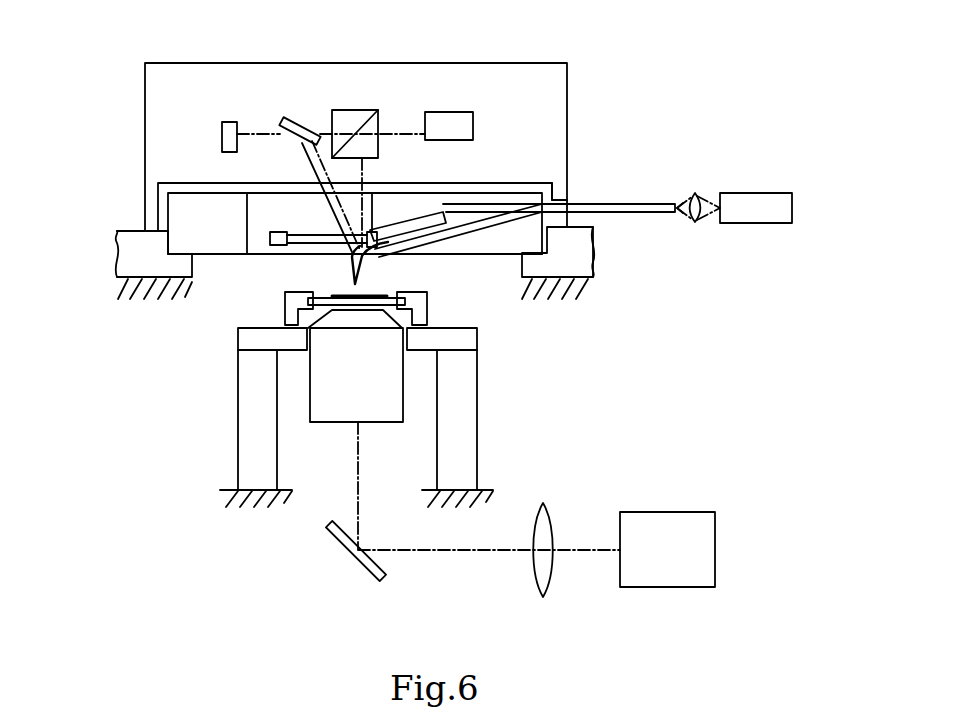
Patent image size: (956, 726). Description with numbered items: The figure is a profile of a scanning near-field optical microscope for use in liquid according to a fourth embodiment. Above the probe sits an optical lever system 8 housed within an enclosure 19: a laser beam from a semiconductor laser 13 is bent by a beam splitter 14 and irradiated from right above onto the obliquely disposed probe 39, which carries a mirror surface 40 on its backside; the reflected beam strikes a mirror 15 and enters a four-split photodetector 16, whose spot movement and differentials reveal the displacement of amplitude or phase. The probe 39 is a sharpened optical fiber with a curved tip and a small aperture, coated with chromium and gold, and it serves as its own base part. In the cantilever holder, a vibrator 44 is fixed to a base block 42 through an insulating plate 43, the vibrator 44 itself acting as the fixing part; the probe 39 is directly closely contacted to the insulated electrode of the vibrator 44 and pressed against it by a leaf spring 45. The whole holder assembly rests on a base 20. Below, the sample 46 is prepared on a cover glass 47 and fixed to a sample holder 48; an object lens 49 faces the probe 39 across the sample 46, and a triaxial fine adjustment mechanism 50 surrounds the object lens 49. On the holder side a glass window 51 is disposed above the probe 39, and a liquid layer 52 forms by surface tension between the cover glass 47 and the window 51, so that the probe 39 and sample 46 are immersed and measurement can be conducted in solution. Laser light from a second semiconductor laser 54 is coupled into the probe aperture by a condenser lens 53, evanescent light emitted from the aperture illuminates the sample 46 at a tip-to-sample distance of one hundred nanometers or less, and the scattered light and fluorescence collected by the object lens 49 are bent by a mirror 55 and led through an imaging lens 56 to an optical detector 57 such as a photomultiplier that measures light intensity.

The optical lever system 8 is at (500, 73).
The semiconductor laser 13 is at (467, 127).
The beam splitter 14 is at (357, 110).
The mirror 15 is at (297, 119).
The four-split photodetector 16 is at (222, 137).
The housing 19 is at (155, 90).
The base 20 is at (130, 262).
The probe 39 is at (453, 247).
The mirror surface 40 is at (352, 250).
The base block 42 is at (522, 193).
The insulating plate 43 is at (427, 213).
The vibrator 44 is at (480, 228).
The leaf spring 45 is at (413, 248).
The sample 46 is at (285, 293).
The cover glass 47 is at (308, 328).
The sample holder 48 is at (298, 310).
The object lens 49 is at (388, 400).
The triaxial fine adjustment mechanism 50 is at (258, 437).
The glass window 51 is at (288, 232).
The liquid layer 52 is at (333, 296).
The condenser lens 53 is at (698, 222).
The semiconductor laser 54 is at (760, 200).
The mirror 55 is at (350, 547).
The imaging lens 56 is at (533, 577).
The optical detector 57 is at (658, 578).